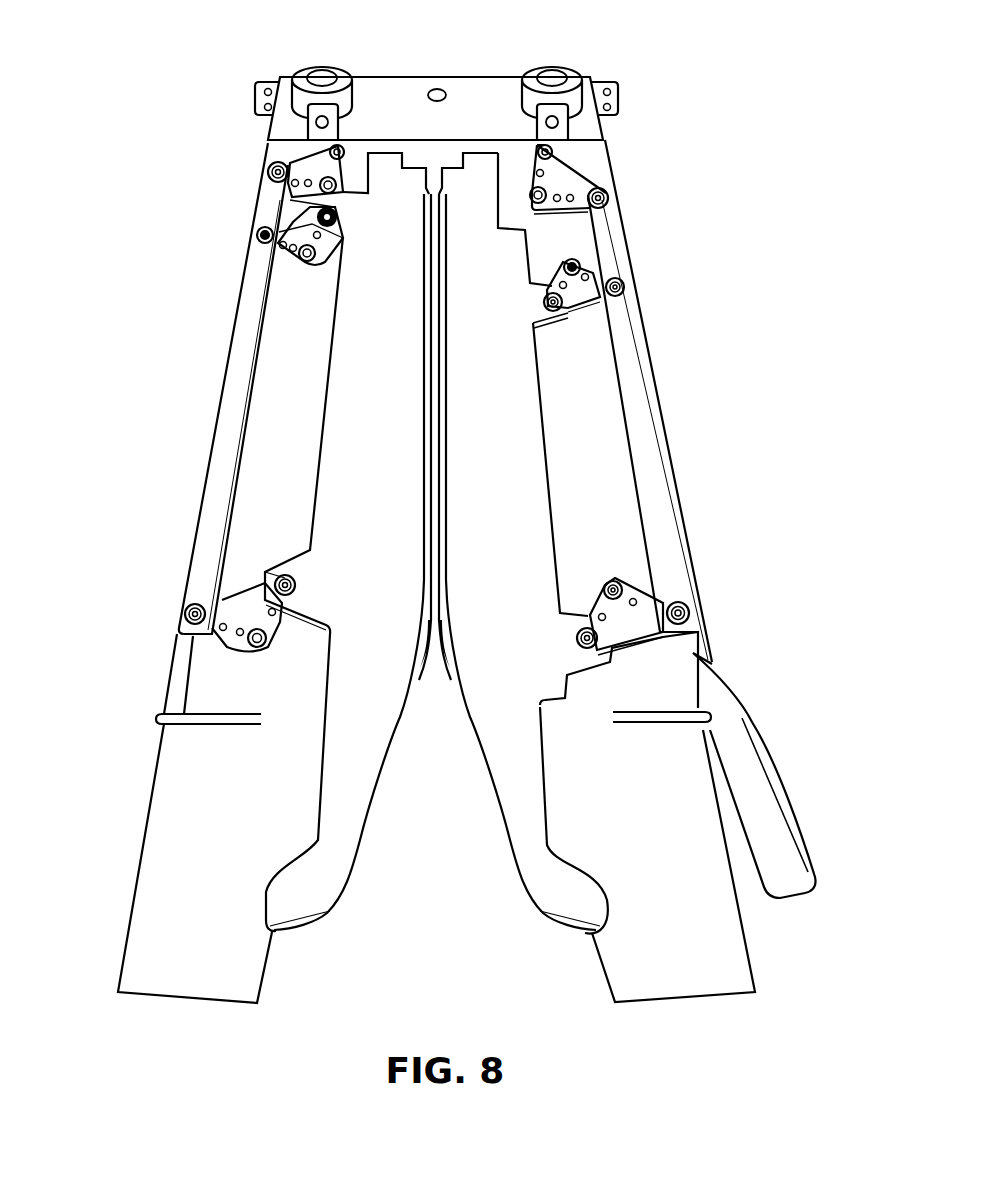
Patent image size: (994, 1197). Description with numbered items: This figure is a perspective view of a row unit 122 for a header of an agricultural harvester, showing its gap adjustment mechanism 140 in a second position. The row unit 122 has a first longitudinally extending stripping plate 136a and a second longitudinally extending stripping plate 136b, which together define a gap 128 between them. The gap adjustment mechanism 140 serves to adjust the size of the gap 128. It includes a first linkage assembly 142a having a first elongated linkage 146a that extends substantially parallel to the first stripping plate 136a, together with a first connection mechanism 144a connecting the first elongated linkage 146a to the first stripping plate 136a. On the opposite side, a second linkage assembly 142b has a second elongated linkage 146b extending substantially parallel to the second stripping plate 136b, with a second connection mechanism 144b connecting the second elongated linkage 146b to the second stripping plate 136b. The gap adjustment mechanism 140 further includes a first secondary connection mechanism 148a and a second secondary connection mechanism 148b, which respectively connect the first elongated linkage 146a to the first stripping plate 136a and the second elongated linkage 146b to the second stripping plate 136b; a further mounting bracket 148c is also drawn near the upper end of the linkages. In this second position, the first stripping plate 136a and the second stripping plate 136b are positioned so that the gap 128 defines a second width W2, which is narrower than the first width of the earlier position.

The row unit 122 is at (568, 42).
The gap 128 is at (444, 857).
The first longitudinally extending stripping plate 136a is at (520, 527).
The second longitudinally extending stripping plate 136b is at (350, 527).
The gap adjustment mechanism 140 is at (152, 400).
The first linkage assembly 142a is at (706, 448).
The second linkage assembly 142b is at (181, 448).
The first connection mechanism 144a is at (586, 292).
The second connection mechanism 144b is at (298, 235).
The first elongated linkage 146a is at (633, 358).
The second elongated linkage 146b is at (246, 348).
The first secondary connection mechanism 148a is at (648, 620).
The second secondary connection mechanism 148b is at (240, 614).
The mounting bracket 148c is at (574, 183).
The second width W2 is at (398, 428).